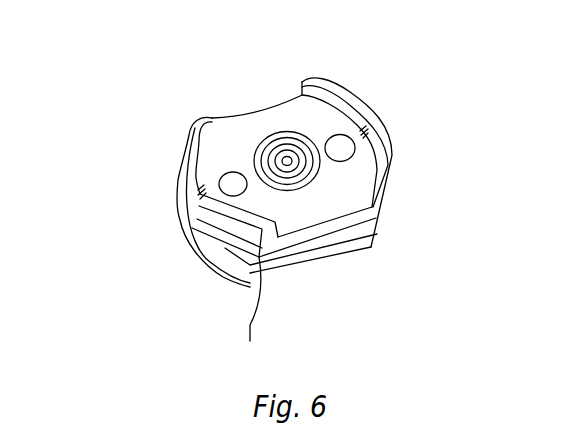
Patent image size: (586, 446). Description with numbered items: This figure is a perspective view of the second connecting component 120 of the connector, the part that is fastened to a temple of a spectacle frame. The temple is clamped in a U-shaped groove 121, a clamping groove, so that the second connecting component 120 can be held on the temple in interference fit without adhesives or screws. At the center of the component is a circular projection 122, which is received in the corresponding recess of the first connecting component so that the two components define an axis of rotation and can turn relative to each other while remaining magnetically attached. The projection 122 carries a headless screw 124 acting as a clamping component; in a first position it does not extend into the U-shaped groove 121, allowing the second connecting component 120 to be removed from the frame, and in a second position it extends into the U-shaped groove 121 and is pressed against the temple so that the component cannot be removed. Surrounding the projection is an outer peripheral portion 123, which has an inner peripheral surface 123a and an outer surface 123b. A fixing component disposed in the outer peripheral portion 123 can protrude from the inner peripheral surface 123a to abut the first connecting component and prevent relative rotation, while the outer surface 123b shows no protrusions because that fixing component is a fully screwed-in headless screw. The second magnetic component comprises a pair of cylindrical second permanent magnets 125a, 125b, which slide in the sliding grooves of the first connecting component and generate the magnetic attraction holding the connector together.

The second connecting component 120 is at (398, 63).
The U-shaped groove 121 is at (252, 318).
The projection 122 is at (290, 170).
The outer peripheral portion 123 is at (388, 153).
The inner peripheral surface 123a is at (301, 93).
The outer surface 123b is at (223, 228).
The headless screw 124 is at (272, 163).
The second permanent magnet 125a is at (338, 146).
The second permanent magnet 125b is at (210, 184).